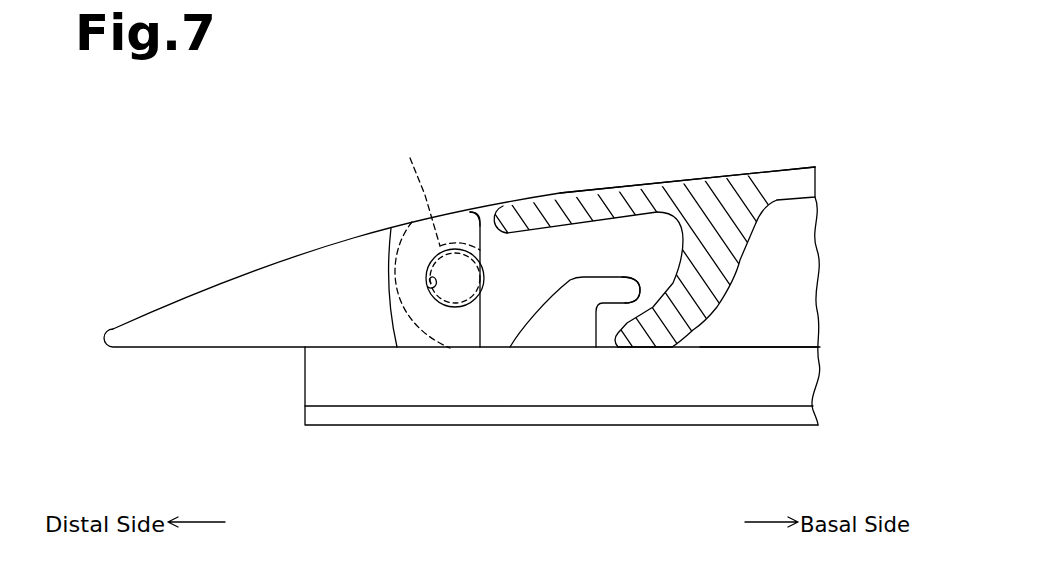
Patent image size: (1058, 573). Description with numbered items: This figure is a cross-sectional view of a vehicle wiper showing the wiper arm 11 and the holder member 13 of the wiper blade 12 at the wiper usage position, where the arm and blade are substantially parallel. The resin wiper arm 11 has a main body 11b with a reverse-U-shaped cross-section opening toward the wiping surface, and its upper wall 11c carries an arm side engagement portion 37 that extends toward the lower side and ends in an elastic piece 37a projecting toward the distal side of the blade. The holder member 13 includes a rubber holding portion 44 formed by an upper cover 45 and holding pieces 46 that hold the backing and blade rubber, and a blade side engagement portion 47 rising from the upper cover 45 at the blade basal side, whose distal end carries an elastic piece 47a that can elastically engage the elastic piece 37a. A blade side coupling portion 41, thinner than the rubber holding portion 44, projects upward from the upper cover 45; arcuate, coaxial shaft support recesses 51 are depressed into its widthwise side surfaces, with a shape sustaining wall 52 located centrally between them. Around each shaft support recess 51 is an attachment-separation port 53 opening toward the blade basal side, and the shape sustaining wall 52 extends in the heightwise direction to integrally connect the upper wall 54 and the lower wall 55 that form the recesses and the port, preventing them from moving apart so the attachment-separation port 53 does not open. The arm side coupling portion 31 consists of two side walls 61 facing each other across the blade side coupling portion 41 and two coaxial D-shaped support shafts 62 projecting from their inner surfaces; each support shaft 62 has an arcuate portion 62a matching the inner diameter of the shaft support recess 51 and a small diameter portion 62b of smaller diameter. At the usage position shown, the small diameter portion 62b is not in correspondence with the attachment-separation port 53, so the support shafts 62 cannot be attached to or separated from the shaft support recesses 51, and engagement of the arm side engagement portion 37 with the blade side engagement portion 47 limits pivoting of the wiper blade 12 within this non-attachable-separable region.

The wiper arm 11 is at (600, 189).
The main body 11b is at (790, 169).
The upper wall 11c is at (647, 187).
The wiper blade 12 is at (462, 257).
The holder member 13 is at (245, 270).
The arm side coupling portion 31 is at (486, 207).
The arm side engagement portion 37 is at (735, 280).
The elastic piece 37a is at (640, 343).
The blade side coupling portion 41 is at (483, 340).
The rubber holding portion 44 is at (518, 427).
The upper cover 45 is at (769, 347).
The holding piece 46 is at (607, 399).
The blade side engagement portion 47 is at (583, 277).
The elastic piece 47a is at (637, 280).
The shaft support recess 51 is at (431, 283).
The shape sustaining wall 52 is at (484, 280).
The attachment-separation port 53 is at (484, 296).
The upper wall 54 is at (453, 226).
The lower wall 55 is at (457, 340).
The side wall 61 is at (403, 232).
The support shaft 62 is at (480, 200).
The arcuate portion 62a is at (438, 188).
The small diameter portion 62b is at (480, 250).